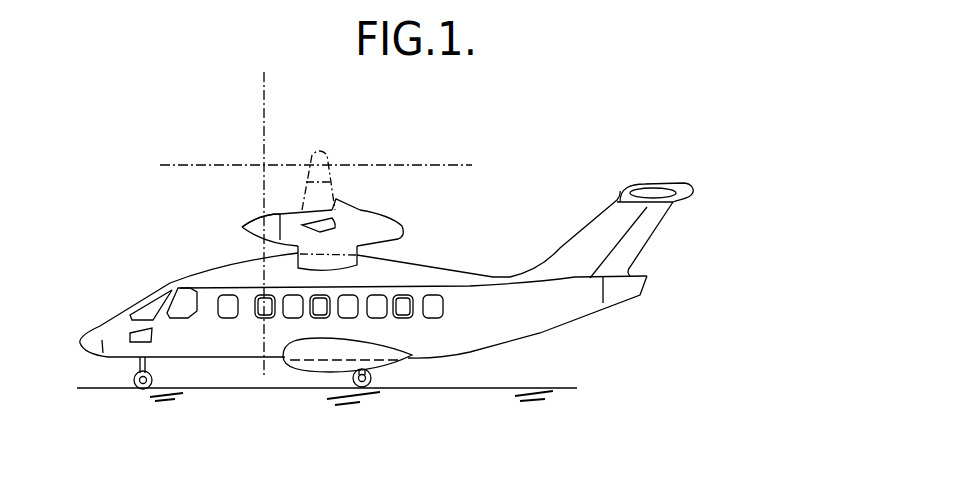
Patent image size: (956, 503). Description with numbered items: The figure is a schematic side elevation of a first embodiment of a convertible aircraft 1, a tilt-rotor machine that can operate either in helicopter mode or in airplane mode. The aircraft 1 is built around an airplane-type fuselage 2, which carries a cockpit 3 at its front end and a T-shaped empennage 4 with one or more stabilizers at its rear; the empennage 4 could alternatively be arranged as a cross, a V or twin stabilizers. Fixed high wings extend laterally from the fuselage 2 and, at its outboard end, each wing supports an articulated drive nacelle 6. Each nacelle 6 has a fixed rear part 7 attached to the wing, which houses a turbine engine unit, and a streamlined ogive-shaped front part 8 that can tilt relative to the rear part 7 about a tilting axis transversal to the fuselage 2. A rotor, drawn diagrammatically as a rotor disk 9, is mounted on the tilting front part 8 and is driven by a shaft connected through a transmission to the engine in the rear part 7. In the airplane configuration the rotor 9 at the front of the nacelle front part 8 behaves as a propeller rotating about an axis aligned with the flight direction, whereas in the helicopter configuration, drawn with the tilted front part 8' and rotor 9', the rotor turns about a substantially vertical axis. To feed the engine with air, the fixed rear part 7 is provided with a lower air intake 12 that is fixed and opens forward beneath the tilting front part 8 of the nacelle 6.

The convertible aircraft 1 is at (240, 358).
The fuselage 2 is at (478, 337).
The cockpit 3 is at (143, 310).
The T-shaped empennage 4 is at (623, 187).
The articulated drive nacelle 6 is at (341, 198).
The fixed rear part of nacelle 7 is at (370, 226).
The tilting front part of nacelle 8 is at (234, 203).
The tilting front part of nacelle in helicopter configuration 8' is at (329, 151).
The rotor 9 is at (239, 215).
The rotor in helicopter configuration 9' is at (316, 134).
The lower air intake 12 is at (298, 248).